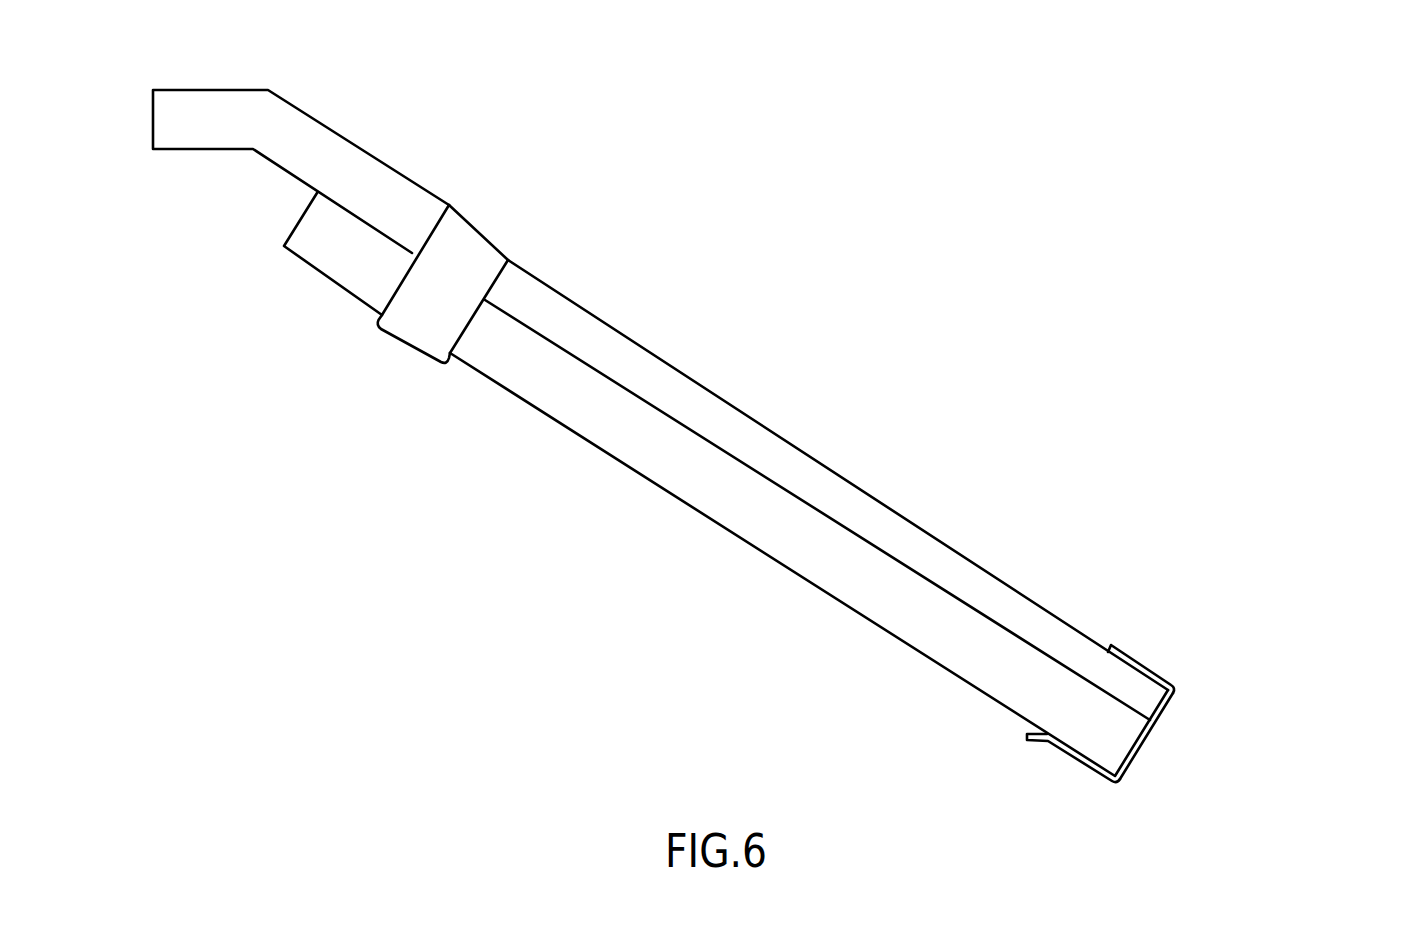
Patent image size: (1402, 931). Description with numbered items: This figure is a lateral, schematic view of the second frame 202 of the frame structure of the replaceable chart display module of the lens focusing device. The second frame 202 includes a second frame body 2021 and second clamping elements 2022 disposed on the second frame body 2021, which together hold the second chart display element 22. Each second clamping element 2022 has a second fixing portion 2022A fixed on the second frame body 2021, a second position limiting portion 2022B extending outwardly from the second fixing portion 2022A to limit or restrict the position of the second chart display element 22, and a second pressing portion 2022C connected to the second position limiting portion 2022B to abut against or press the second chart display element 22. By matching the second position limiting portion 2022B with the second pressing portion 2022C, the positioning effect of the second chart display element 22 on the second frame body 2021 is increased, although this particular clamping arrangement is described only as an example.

The second frame 202 is at (112, 72).
The second chart display element 22 is at (790, 542).
The second frame body 2021 is at (800, 480).
The second clamping element 2022 is at (836, 504).
The second fixing portion 2022A is at (477, 236).
The second position limiting portion 2022B is at (447, 287).
The second pressing portion 2022C is at (410, 350).